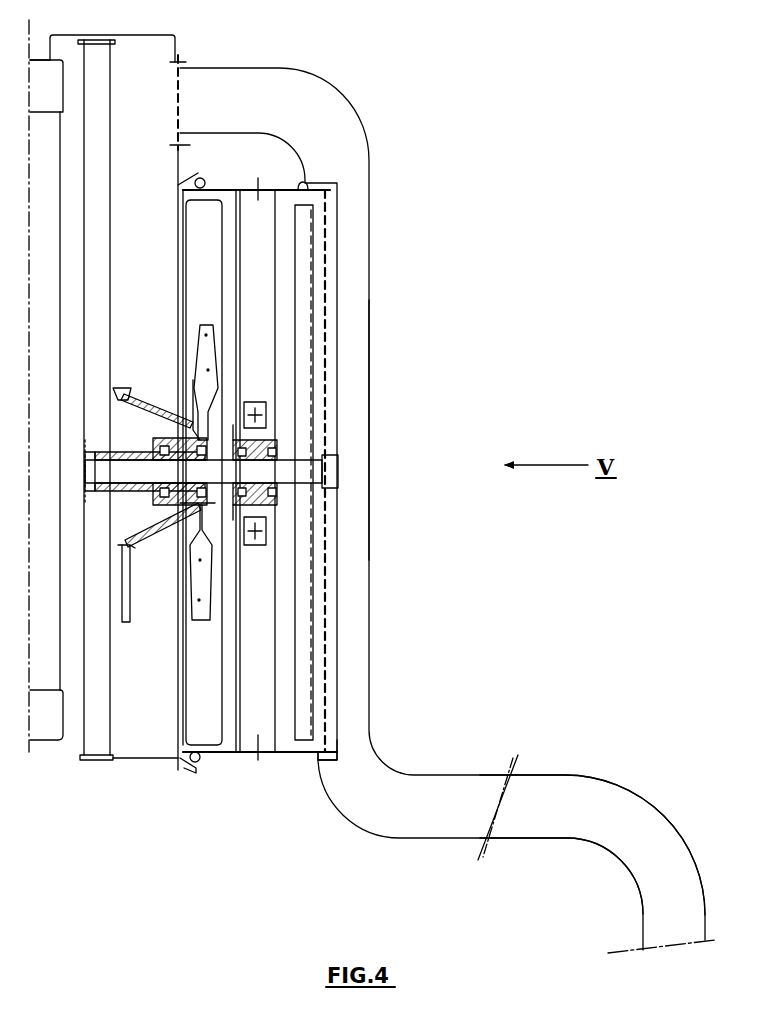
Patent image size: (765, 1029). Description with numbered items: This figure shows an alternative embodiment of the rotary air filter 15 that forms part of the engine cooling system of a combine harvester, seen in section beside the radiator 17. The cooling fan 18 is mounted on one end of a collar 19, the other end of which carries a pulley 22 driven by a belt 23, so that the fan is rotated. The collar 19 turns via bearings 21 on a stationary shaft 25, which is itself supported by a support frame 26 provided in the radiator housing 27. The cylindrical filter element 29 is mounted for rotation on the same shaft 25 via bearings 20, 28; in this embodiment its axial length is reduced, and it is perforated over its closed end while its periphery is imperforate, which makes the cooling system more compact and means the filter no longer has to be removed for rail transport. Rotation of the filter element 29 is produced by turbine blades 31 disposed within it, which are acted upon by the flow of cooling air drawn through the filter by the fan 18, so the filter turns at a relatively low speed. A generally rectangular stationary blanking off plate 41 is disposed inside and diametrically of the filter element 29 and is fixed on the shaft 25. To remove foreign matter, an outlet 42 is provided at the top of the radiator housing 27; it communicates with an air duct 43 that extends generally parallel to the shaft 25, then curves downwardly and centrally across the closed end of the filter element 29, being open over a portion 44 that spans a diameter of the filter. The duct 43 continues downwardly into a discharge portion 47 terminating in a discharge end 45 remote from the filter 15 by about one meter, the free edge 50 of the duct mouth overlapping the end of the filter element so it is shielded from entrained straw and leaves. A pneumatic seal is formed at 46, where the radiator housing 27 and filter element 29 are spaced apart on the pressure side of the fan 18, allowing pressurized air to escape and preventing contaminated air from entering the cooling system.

The rotary air filter 15 is at (343, 78).
The radiator 17 is at (43, 552).
The cooling fan 18 is at (197, 300).
The collar 19 is at (165, 420).
The bearings 20 is at (338, 478).
The bearings 21 is at (228, 437).
The pulley 22 is at (133, 548).
The belt 23 is at (132, 622).
The stationary shaft 25 is at (103, 462).
The support frame 26 is at (103, 348).
The radiator housing 27 is at (158, 36).
The bearings 28 is at (287, 440).
The filter element 29 is at (302, 188).
The turbine blades 31 is at (255, 266).
The blanking off plate 41 is at (305, 386).
The outlet 42 is at (172, 100).
The air duct 43 is at (250, 68).
The open portion 44 is at (370, 430).
The discharge end 45 is at (657, 955).
The pneumatic seal space 46 is at (210, 180).
The discharge portion 47 is at (600, 782).
The free edge 50 is at (312, 756).